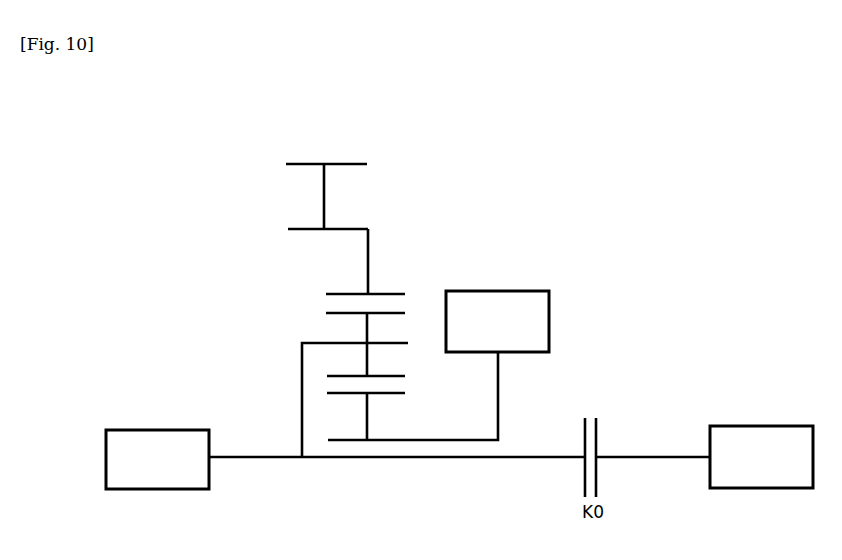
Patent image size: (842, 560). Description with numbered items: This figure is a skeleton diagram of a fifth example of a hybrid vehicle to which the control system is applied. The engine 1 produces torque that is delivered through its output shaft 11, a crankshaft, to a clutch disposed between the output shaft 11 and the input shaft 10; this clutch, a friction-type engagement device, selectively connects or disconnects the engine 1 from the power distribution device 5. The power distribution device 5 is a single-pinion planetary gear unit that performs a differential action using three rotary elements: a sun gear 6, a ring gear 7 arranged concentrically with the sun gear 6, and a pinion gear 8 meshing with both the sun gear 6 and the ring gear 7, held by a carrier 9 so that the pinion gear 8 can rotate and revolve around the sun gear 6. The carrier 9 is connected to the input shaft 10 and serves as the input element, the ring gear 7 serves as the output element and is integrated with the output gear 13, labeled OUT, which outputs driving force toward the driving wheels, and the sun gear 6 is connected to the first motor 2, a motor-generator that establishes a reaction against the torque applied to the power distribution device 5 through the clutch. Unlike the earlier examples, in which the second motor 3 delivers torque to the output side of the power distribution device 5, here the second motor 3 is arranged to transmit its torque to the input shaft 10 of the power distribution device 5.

The engine 1 is at (760, 425).
The first motor 2 is at (521, 290).
The second motor 3 is at (172, 428).
The power distribution device 5 is at (281, 280).
The sun gear 6 is at (391, 394).
The ring gear 7 is at (388, 292).
The pinion gear 8 is at (334, 314).
The carrier 9 is at (302, 364).
The input shaft 10 is at (480, 460).
The output shaft 11 is at (650, 460).
The output gear 13 is at (307, 163).